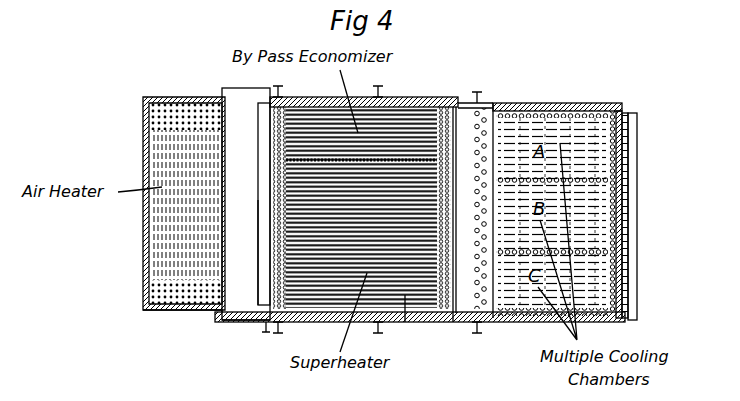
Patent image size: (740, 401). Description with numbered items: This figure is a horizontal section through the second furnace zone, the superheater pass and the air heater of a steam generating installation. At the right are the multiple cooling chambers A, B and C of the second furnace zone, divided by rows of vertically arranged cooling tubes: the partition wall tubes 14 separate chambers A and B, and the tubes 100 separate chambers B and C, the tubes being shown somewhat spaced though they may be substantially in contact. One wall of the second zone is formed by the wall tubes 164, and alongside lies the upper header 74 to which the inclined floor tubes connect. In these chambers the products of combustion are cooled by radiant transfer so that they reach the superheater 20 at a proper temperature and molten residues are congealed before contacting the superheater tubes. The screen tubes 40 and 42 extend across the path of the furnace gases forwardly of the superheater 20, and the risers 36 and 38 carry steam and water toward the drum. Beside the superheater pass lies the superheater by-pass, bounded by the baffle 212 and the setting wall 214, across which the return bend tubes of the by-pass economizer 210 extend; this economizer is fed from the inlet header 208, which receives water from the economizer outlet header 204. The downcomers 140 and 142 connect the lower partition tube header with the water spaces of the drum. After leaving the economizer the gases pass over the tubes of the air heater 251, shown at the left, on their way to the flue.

The air heater 251 is at (172, 210).
The inlet header 208 is at (262, 136).
The economizer outlet header 204 is at (262, 283).
The setting wall 214 is at (330, 97).
The baffle 212 is at (300, 188).
The by-pass economizer 210 is at (392, 132).
The riser 36 is at (453, 322).
The superheater 20 is at (405, 297).
The riser 38 is at (458, 322).
The screen tube 40 is at (500, 106).
The screen tube 42 is at (489, 110).
The partition wall tubes 14 is at (600, 180).
The cooling tubes 100 is at (600, 253).
The wall tubes 164 is at (617, 155).
The upper header 74 is at (634, 212).
The downcomer 142 is at (266, 324).
The downcomer 140 is at (281, 324).